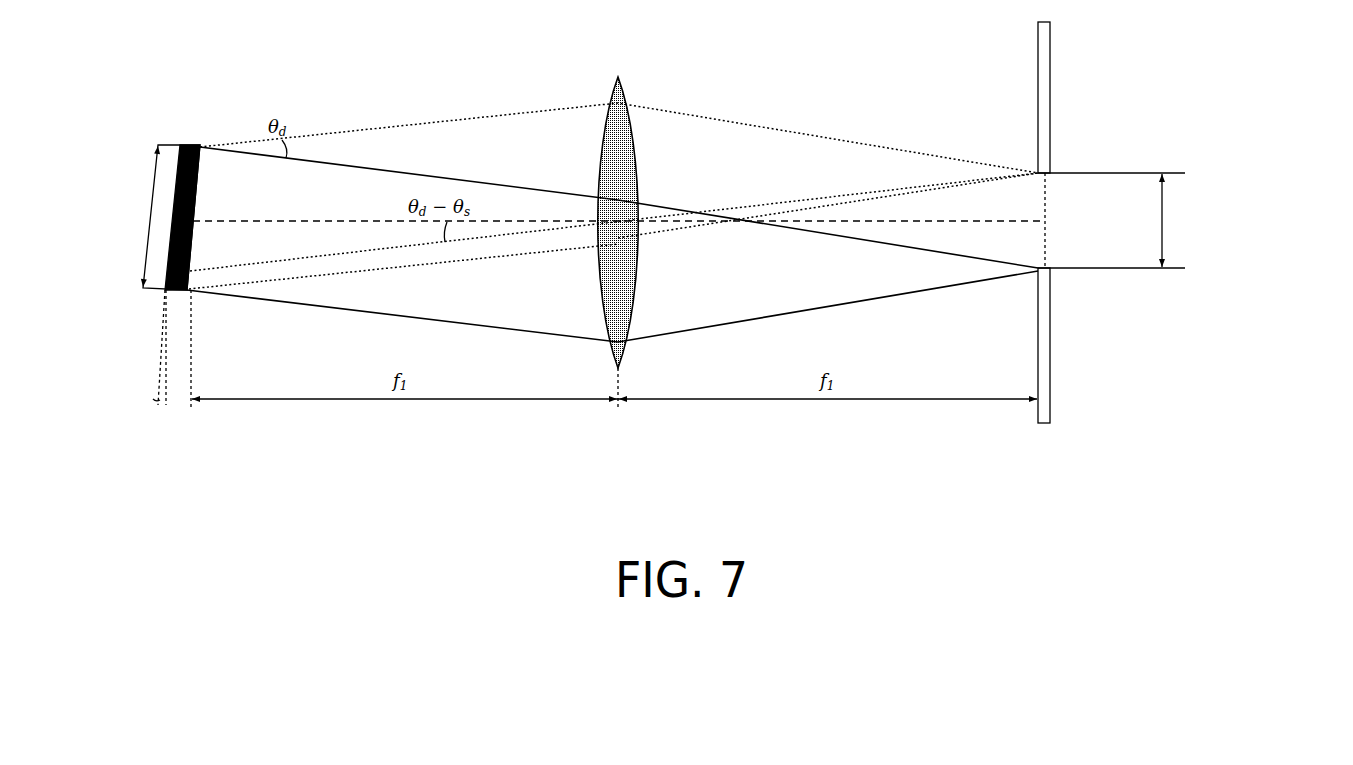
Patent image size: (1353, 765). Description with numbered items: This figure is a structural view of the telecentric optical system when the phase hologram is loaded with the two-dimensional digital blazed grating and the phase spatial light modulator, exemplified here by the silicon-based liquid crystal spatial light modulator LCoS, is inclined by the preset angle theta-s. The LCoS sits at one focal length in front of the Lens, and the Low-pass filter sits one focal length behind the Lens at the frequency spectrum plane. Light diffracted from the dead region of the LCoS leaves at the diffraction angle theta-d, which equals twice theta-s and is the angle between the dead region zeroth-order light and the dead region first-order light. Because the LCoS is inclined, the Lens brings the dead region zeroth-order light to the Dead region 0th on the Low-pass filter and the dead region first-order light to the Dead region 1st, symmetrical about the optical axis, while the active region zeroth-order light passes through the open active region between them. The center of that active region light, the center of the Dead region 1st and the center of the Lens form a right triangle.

The silicon-based liquid crystal spatial light modulator LCoS is at (142, 277).
The lens Lens is at (618, 263).
The low-pass filter Low-pass filter is at (1051, 242).
The dead region first-order diffracted light Dead region 1st is at (1119, 155).
The dead region zeroth-order diffracted light Dead region 0th is at (1121, 287).